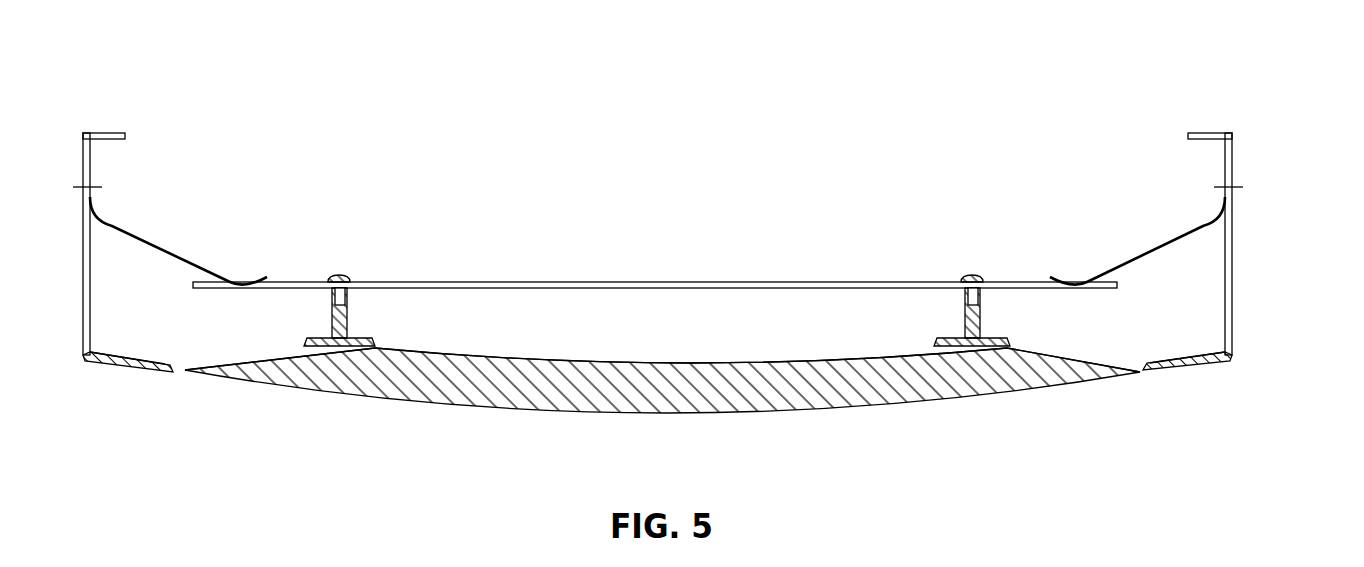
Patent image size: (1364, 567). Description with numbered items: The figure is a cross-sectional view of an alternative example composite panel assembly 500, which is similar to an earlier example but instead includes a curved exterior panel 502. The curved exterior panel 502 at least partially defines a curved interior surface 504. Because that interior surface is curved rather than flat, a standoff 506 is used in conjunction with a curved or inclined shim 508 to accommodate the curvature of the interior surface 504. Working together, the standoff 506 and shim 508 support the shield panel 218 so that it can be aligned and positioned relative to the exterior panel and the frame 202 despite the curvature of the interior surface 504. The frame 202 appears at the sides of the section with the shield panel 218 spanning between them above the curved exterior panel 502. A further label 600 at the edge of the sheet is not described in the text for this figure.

The composite panel assembly 500 is at (709, 201).
The frame 202 is at (1252, 165).
The shield panel 218 is at (593, 282).
The curved exterior panel 502 is at (662, 351).
The curved interior surface 504 is at (703, 362).
The standoff 506 is at (347, 315).
The curved or inclined shim 508 is at (379, 352).
The light assembly (FIG. 6) 600 is at (1220, 566).